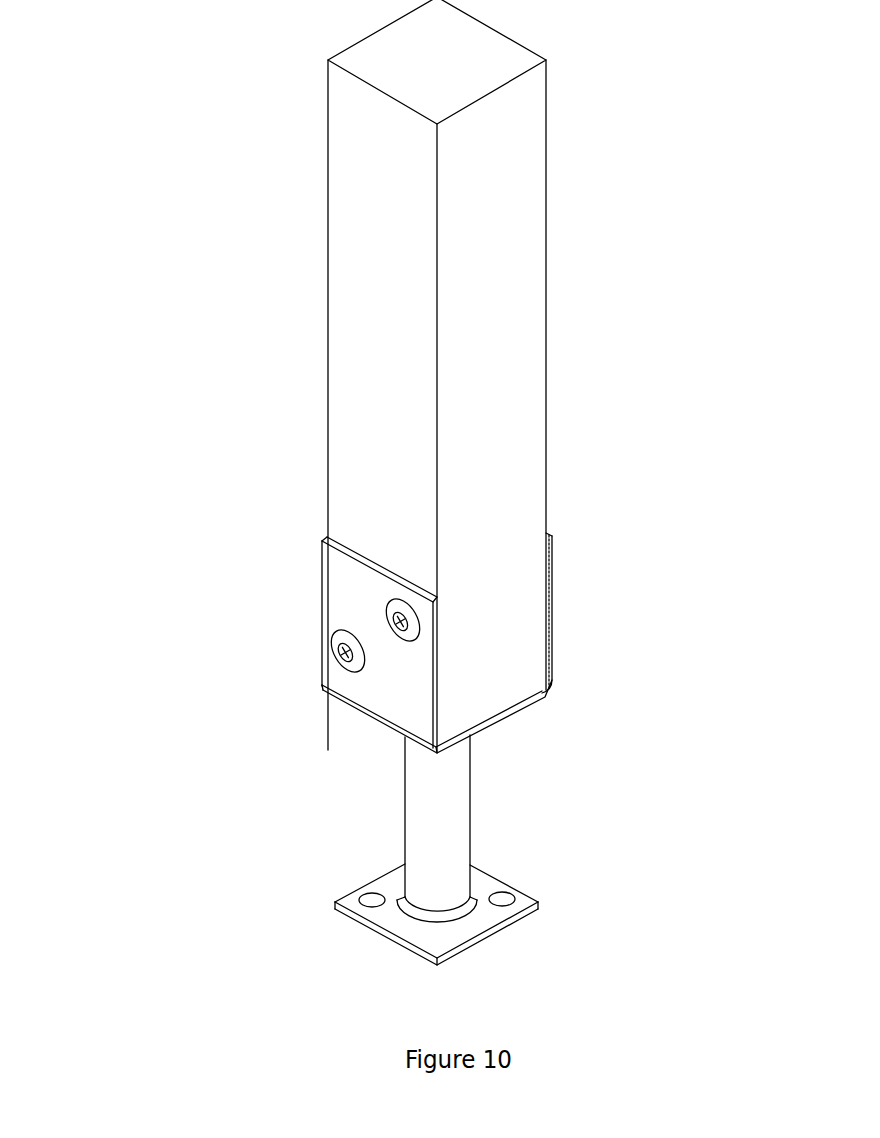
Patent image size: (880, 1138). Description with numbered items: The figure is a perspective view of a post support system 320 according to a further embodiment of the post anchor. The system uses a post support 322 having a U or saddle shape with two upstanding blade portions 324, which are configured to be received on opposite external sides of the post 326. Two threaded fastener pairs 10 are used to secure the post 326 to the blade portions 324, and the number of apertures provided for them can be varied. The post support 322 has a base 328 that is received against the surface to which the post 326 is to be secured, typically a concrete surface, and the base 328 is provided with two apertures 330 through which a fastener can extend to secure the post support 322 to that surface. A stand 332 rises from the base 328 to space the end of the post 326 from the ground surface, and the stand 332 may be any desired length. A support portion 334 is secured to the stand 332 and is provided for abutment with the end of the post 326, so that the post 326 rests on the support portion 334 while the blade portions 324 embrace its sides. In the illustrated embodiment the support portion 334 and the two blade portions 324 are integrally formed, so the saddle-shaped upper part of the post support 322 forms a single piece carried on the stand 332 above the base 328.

The post support system 320 is at (384, 376).
The post 326 is at (539, 235).
The blade portions 324 is at (382, 589).
The support portion 334 is at (515, 700).
The threaded fastener pair 10 is at (335, 642).
The post support 322 is at (387, 861).
The stand 332 is at (468, 808).
The base 328 is at (444, 913).
The apertures 330 is at (372, 900).